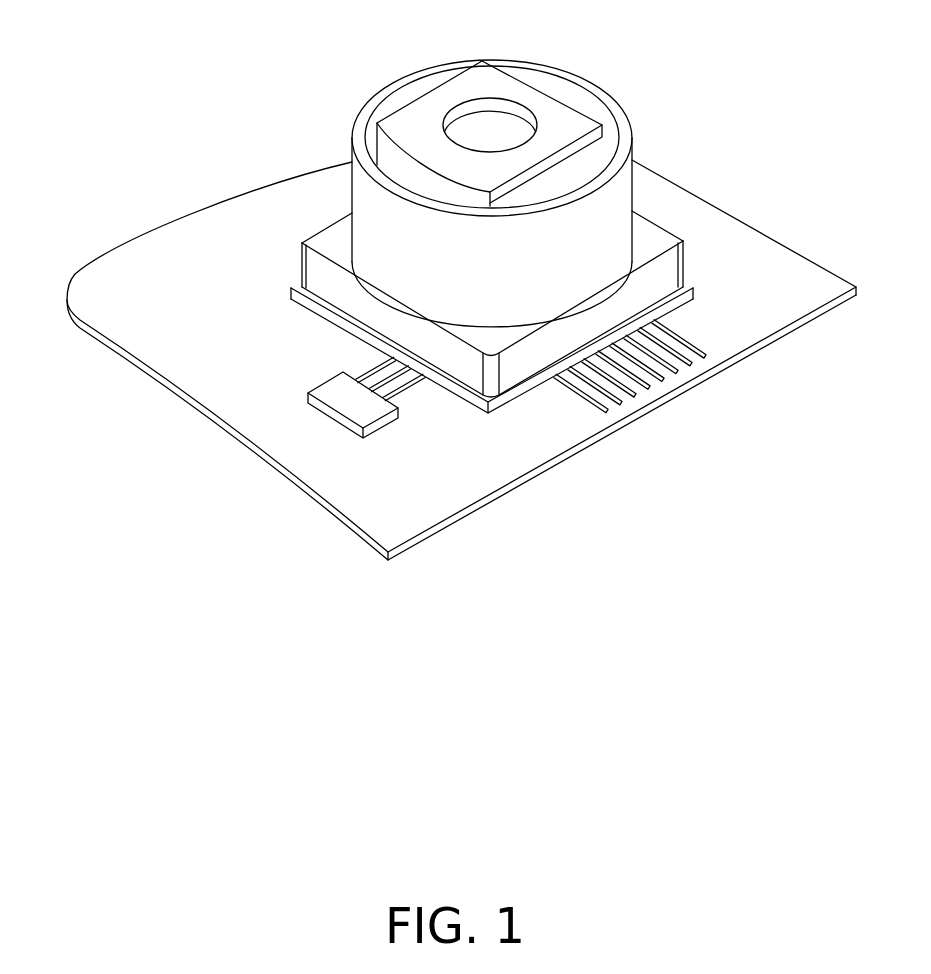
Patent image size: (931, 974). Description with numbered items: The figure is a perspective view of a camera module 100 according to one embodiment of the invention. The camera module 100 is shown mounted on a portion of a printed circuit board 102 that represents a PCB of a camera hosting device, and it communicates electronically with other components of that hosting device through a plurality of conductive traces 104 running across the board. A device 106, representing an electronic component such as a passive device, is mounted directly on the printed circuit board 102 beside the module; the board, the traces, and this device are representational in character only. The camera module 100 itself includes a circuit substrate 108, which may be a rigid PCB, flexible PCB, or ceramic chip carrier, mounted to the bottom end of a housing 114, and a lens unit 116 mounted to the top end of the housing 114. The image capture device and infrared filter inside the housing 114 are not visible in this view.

The camera module 100 is at (290, 130).
The printed circuit board 102 is at (776, 268).
The conductive traces 104 is at (602, 413).
The device 106 is at (355, 398).
The circuit substrate 108 is at (448, 380).
The housing 114 is at (607, 209).
The lens unit 116 is at (510, 74).